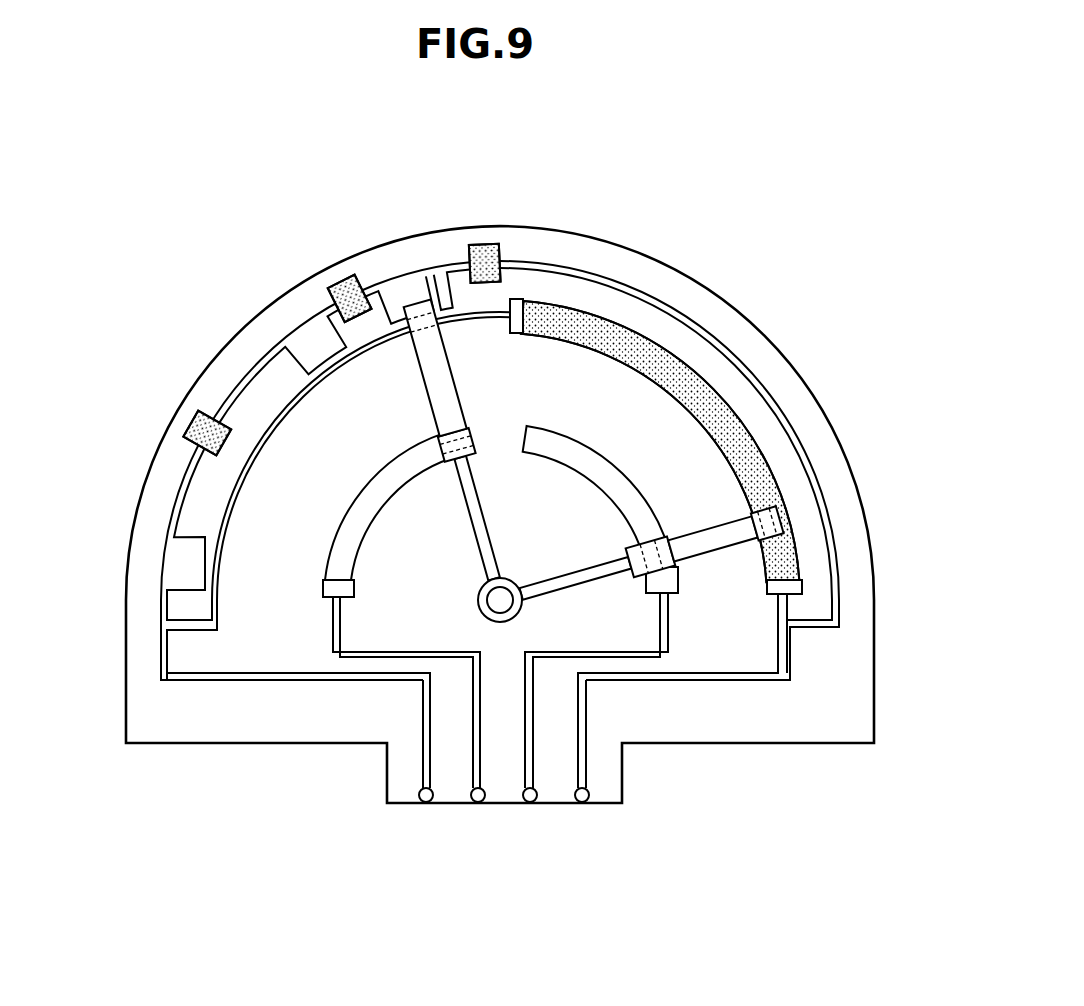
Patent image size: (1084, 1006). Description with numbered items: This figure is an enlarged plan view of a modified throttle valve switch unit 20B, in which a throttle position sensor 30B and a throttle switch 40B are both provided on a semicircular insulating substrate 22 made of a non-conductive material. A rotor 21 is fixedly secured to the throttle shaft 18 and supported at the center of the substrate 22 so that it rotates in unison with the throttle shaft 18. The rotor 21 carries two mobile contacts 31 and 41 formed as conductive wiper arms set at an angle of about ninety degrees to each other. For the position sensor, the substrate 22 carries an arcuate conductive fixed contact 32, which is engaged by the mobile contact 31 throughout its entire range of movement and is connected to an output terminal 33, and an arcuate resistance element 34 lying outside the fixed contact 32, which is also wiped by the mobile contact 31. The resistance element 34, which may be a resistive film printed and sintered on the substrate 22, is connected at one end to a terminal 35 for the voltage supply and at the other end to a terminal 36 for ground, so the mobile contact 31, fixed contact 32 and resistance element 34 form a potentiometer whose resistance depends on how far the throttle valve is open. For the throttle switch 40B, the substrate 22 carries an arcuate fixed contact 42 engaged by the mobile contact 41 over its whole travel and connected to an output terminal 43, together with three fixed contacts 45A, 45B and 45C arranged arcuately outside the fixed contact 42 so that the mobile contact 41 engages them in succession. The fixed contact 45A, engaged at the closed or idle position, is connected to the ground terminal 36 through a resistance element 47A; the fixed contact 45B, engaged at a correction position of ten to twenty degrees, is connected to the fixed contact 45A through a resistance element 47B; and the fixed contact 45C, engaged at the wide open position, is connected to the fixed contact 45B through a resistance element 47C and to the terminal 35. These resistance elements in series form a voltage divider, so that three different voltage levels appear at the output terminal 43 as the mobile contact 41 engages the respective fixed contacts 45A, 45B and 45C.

The throttle shaft 18 is at (508, 602).
The throttle valve switch unit 20B is at (729, 284).
The rotor 21 is at (493, 617).
The insulating substrate 22 is at (853, 686).
The throttle position sensor 30B is at (753, 409).
The mobile contact 31 is at (783, 522).
The fixed contact 32 is at (640, 512).
The output terminal 33 is at (530, 803).
The resistance element 34 is at (642, 345).
The terminal 35 is at (426, 803).
The ground terminal 36 is at (582, 803).
The throttle switch 40B is at (322, 526).
The mobile contact 41 is at (412, 308).
The fixed contact 42 is at (333, 582).
The output terminal 43 is at (478, 803).
The fixed contact 45A is at (432, 290).
The fixed contact 45B is at (310, 338).
The fixed contact 45C is at (195, 558).
The resistance element 47A is at (492, 255).
The resistance element 47B is at (350, 285).
The resistance element 47C is at (197, 425).